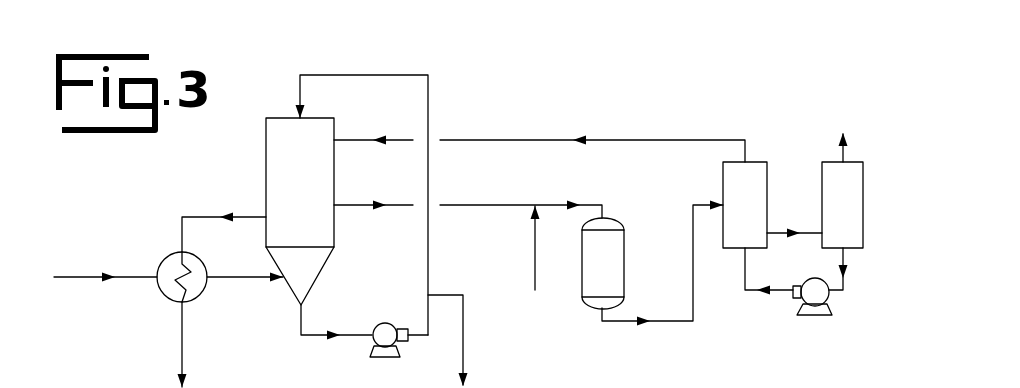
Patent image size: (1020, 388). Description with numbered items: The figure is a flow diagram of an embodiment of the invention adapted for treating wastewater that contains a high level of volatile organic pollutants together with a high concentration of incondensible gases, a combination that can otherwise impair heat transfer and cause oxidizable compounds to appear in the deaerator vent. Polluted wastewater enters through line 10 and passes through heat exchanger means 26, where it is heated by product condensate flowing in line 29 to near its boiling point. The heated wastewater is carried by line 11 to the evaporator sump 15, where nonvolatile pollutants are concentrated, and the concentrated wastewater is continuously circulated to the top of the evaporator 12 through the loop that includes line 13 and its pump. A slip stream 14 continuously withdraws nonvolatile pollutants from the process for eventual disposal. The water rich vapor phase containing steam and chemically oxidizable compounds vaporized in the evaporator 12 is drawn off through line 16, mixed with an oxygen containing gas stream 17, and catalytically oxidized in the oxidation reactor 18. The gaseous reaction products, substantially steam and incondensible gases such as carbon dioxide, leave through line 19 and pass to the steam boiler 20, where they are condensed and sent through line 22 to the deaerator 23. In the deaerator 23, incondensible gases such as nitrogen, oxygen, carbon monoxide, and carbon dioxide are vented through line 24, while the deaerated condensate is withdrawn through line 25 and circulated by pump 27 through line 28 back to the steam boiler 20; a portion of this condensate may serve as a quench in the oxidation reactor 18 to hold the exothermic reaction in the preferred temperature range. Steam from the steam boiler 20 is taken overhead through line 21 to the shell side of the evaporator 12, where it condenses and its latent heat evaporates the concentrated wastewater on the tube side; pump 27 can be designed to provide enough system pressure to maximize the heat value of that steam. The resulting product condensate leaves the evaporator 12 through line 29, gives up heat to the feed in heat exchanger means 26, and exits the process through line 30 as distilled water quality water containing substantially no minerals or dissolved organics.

The line 10 is at (80, 277).
The line 11 is at (240, 277).
The evaporator 12 is at (266, 140).
The bottoms line 13 is at (318, 332).
The slip stream 14 is at (466, 338).
The evaporator sump 15 is at (327, 262).
The line 16 is at (380, 202).
The oxygen containing gas stream 17 is at (535, 262).
The oxidation reactor 18 is at (624, 257).
The line 19 is at (623, 321).
The steam boiler 20 is at (767, 180).
The line 21 is at (663, 140).
The line 22 is at (777, 233).
The deaerator 23 is at (863, 182).
The line 24 is at (847, 145).
The line 25 is at (847, 272).
The heat exchanger means 26 is at (197, 257).
The pump 27 is at (822, 315).
The line 28 is at (752, 292).
The line 29 is at (201, 217).
The line 30 is at (192, 375).